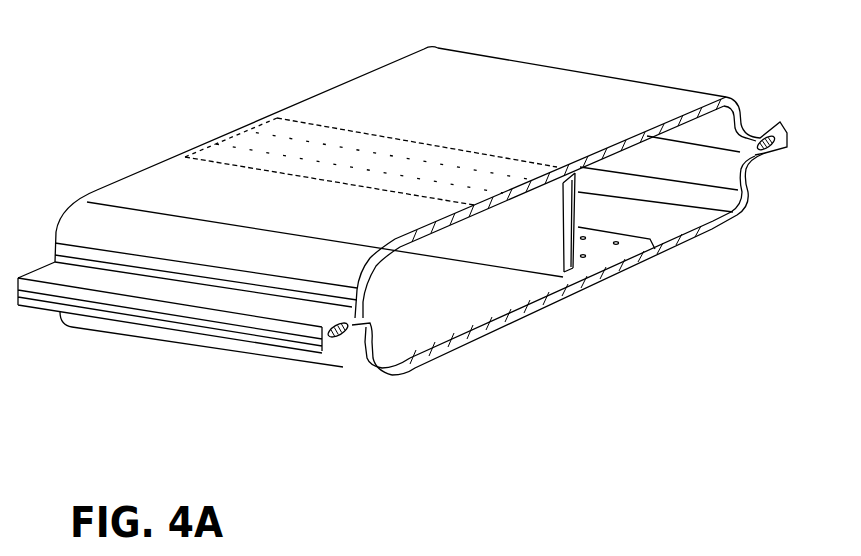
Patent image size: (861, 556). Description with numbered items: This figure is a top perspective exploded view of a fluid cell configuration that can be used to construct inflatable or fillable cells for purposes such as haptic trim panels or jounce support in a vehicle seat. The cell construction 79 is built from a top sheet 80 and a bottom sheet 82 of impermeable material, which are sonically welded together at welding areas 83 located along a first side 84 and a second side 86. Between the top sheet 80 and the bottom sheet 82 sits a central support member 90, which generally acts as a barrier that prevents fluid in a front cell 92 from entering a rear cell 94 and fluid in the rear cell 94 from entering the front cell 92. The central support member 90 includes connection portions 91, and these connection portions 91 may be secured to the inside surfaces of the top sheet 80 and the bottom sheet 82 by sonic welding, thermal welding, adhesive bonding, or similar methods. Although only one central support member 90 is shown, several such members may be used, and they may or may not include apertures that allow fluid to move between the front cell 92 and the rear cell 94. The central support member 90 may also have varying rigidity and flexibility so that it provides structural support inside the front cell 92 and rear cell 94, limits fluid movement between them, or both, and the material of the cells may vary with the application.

The cell construction 79 is at (102, 357).
The top sheet 80 is at (593, 107).
The bottom sheet 82 is at (701, 234).
The welding areas 83 is at (343, 344).
The first side 84 is at (163, 320).
The second side 86 is at (782, 123).
The central support member 90 is at (536, 238).
The connection portions 91 is at (243, 138).
The front cell 92 is at (411, 316).
The rear cell 94 is at (598, 225).